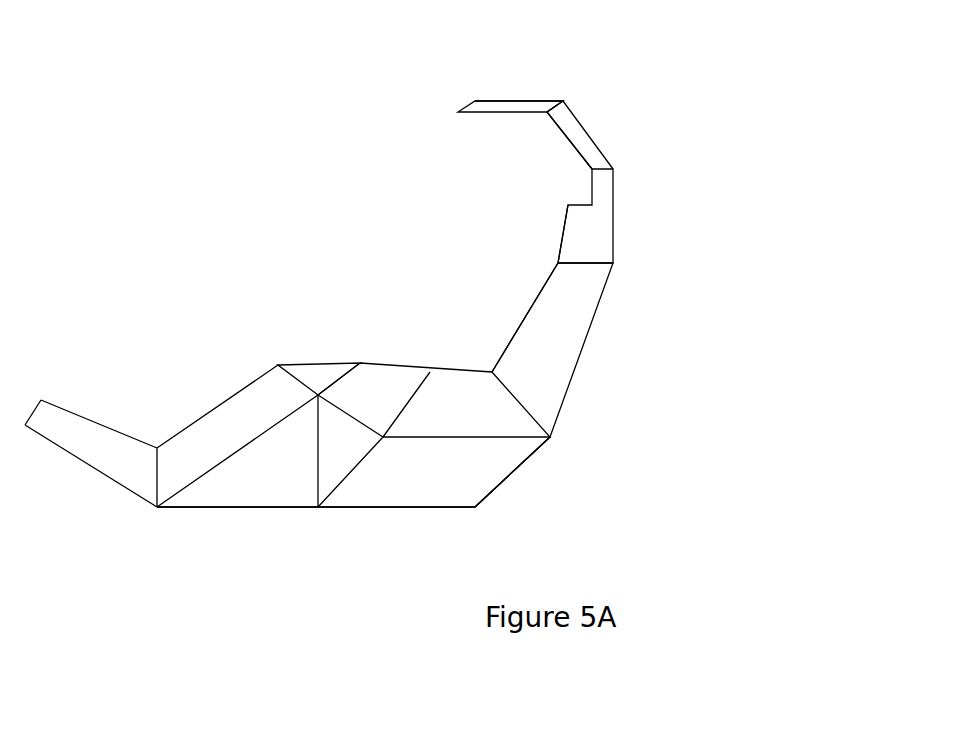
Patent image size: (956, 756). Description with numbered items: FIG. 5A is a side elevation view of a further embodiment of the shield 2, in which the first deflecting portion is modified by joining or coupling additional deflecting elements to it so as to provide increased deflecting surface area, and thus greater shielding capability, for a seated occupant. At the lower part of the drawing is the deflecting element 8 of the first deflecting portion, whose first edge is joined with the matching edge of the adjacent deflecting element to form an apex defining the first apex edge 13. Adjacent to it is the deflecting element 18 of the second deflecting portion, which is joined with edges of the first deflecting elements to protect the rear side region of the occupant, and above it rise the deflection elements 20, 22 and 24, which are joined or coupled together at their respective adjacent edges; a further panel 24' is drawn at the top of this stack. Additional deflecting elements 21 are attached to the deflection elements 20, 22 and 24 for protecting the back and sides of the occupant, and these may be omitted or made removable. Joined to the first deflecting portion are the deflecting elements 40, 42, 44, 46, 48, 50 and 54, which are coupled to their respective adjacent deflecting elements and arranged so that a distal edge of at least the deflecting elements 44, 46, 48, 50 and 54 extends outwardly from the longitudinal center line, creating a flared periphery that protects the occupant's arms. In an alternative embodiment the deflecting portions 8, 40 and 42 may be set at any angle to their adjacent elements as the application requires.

The shield 2 is at (732, 72).
The deflecting element 8 is at (450, 473).
The first apex edge 13 is at (420, 508).
The deflecting element 18 is at (525, 463).
The deflection element 20 is at (580, 360).
The additional deflecting elements 21 is at (503, 107).
The deflection element 22 is at (615, 223).
The deflection element 24 is at (597, 123).
The top flap 24' is at (510, 70).
The deflecting element 40 is at (342, 450).
The deflecting element 42 is at (252, 483).
The deflecting element 44 is at (450, 393).
The deflecting element 46 is at (387, 383).
The deflecting element 48 is at (315, 370).
The deflecting element 50 is at (233, 413).
The deflecting element 54 is at (100, 440).